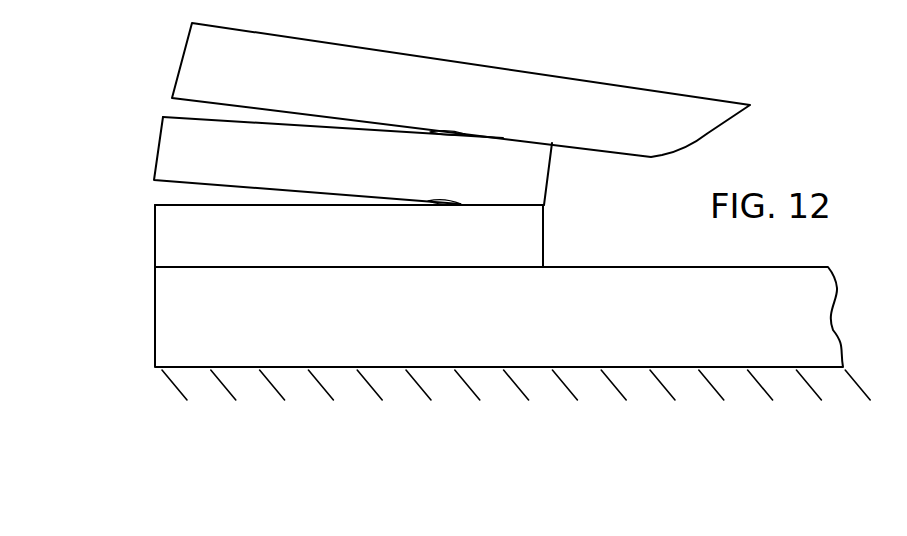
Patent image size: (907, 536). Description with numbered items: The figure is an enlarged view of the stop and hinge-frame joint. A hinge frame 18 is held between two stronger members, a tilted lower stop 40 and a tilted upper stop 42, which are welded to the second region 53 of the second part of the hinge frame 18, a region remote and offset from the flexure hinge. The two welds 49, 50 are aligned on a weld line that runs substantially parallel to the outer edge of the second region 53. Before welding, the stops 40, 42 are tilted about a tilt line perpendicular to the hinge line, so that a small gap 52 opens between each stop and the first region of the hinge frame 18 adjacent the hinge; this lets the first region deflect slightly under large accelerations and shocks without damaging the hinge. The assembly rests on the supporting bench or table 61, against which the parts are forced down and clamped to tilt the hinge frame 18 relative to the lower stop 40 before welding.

The tilted upper stop 42 is at (411, 85).
The second region 53 is at (185, 109).
The gap 52 is at (170, 193).
The weld 50 is at (450, 130).
The weld 49 is at (450, 200).
The hinge frame 18 is at (532, 192).
The tilted lower stop 40 is at (527, 230).
The supporting bench or table 61 is at (540, 416).